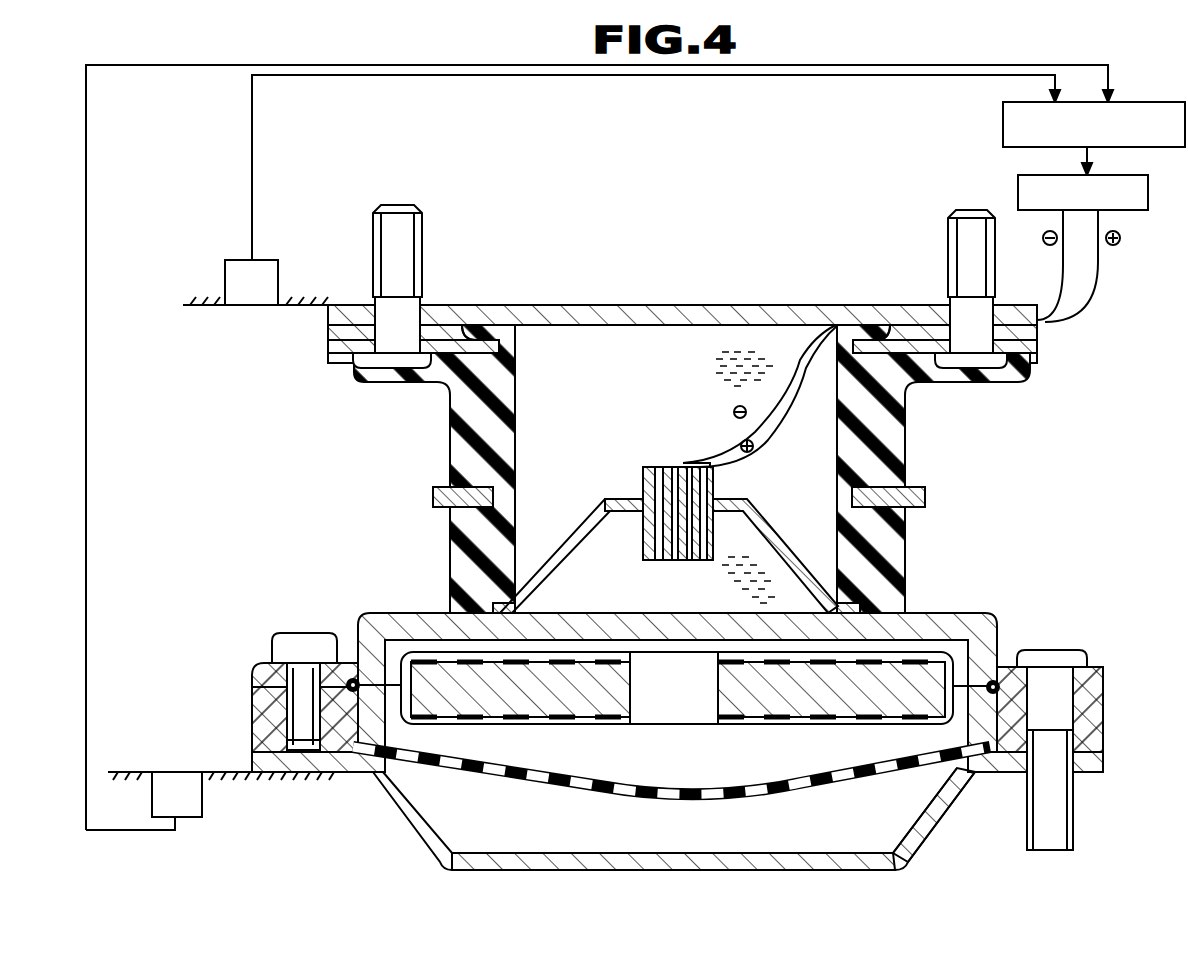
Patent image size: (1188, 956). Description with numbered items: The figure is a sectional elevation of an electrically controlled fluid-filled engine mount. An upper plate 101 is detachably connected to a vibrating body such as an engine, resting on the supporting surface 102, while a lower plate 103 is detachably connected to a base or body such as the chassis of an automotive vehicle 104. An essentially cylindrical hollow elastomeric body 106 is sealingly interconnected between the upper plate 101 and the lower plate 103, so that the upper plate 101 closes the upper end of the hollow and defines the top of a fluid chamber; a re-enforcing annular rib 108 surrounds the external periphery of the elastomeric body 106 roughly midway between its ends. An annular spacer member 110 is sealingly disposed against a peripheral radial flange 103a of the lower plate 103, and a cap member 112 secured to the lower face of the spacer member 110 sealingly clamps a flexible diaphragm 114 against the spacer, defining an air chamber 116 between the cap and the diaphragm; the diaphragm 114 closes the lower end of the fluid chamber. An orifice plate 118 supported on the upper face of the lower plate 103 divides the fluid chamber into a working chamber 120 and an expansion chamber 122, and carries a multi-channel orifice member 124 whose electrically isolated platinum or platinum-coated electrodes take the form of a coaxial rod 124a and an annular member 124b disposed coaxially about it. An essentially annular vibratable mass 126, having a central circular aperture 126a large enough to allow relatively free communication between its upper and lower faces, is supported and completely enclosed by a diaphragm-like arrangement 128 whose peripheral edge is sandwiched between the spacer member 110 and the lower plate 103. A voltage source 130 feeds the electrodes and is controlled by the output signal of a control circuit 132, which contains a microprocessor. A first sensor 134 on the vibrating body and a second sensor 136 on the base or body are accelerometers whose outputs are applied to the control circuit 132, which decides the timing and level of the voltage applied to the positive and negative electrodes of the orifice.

The upper plate 101 is at (555, 305).
The upper support surface 102 is at (335, 300).
The lower plate 103 is at (393, 620).
The peripheral radial flange 103a is at (252, 683).
The chassis of an automotive vehicle 104 is at (250, 772).
The elastomeric body 106 is at (462, 445).
The re-enforcing annular rib 108 is at (437, 496).
The annular spacer member 110 is at (263, 730).
The cap member 112 is at (423, 846).
The flexible diaphragm 114 is at (460, 770).
The air chamber 116 is at (597, 839).
The orifice plate 118 is at (580, 527).
The working chamber 120 is at (577, 361).
The expansion chamber 122 is at (607, 604).
The multi-channel orifice member 124 is at (643, 478).
The coaxial rod 124a is at (682, 463).
The annular member 124b is at (665, 467).
The vibratable mass 126 is at (558, 700).
The circular aperture 126a is at (675, 710).
The diaphragm-like arrangement 128 is at (995, 678).
The voltage source 130 is at (1018, 190).
The control circuit 132 is at (1003, 120).
The first sensor 134 is at (228, 278).
The second sensor 136 is at (190, 817).